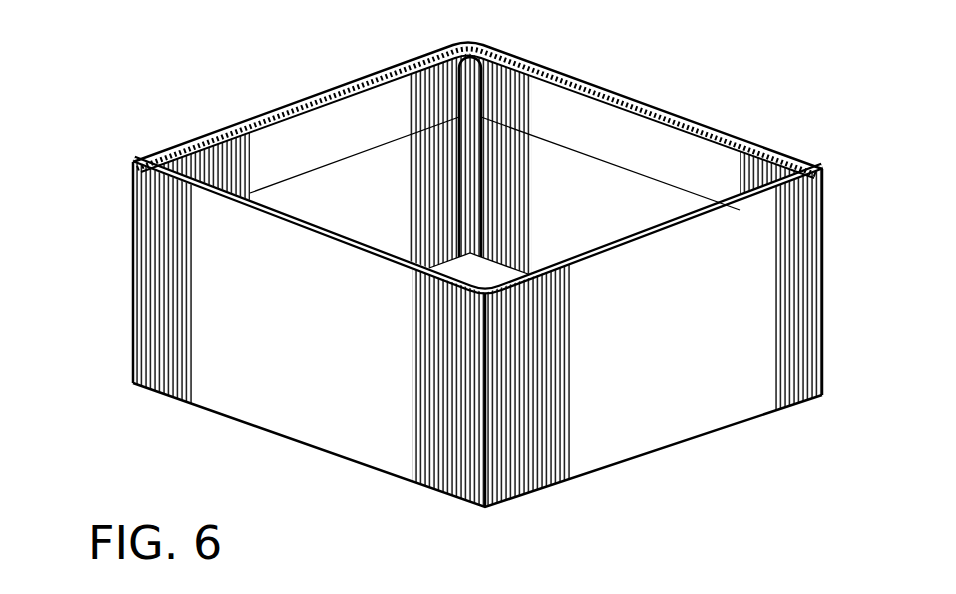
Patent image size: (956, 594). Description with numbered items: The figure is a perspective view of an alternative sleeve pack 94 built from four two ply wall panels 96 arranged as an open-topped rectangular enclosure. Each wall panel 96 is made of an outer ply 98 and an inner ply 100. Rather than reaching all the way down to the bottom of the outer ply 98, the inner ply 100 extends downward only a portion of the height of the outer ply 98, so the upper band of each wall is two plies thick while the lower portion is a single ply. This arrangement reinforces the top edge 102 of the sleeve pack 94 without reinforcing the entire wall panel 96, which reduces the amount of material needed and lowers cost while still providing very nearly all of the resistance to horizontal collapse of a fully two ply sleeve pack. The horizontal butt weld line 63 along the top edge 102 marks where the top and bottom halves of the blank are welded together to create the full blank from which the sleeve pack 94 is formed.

The sleeve pack 94 is at (437, 266).
The wall panel 96 is at (293, 103).
The outer ply 98 is at (378, 210).
The inner ply 100 is at (366, 138).
The top edge 102 is at (558, 72).
The horizontal butt weld line 63 is at (722, 104).